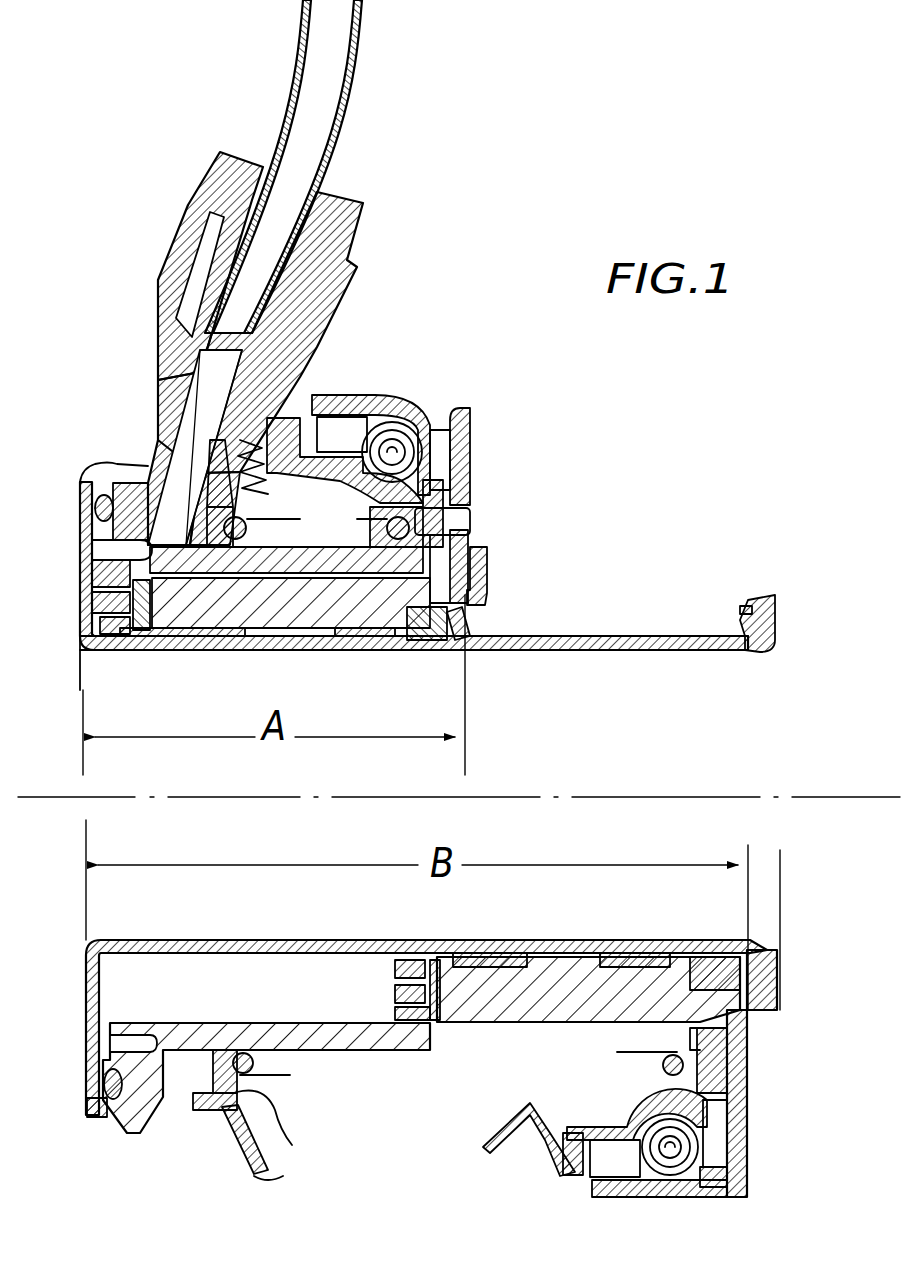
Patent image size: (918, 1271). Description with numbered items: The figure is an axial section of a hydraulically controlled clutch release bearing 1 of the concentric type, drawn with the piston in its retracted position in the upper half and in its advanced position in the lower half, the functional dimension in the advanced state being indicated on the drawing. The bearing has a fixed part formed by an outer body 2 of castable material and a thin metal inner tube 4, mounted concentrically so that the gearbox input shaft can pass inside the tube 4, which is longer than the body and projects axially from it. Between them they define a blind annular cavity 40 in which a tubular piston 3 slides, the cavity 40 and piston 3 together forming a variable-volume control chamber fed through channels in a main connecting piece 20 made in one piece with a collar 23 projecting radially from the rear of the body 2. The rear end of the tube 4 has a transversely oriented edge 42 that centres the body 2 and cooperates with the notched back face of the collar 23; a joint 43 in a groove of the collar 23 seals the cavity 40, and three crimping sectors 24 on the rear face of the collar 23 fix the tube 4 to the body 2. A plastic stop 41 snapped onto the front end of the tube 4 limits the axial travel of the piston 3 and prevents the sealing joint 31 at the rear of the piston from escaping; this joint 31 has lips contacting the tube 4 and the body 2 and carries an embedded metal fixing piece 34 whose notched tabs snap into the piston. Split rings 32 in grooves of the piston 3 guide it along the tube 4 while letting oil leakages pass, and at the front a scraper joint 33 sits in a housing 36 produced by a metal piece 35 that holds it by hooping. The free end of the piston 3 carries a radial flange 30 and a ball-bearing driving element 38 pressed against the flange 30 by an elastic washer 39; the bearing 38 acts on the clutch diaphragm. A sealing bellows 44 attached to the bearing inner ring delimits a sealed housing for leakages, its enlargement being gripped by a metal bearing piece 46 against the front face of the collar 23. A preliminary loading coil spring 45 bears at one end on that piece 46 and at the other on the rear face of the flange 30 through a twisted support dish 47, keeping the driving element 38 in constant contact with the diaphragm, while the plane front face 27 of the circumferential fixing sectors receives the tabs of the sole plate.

The clutch release bearing 1 is at (475, 208).
The outer body 2 is at (355, 318).
The piston 3 is at (527, 1025).
The inner tube 4 is at (623, 640).
The main connecting piece 20 is at (190, 230).
The collar 23 is at (165, 1137).
The crimping sectors 24 is at (87, 1115).
The plane front face 27 is at (180, 1120).
The radial flange 30 is at (745, 1065).
The sealing joint 31 is at (418, 1025).
The split rings 32 is at (490, 958).
The scraper joint 33 is at (720, 965).
The metal fixing piece 34 is at (443, 1025).
The piece 35 is at (404, 612).
The housing 36 is at (490, 615).
The driving element 38 is at (475, 445).
The elastic washer 39 is at (480, 562).
The blind annular cavity 40 is at (300, 985).
The stop 41 is at (763, 598).
The transverse edge 42 is at (80, 580).
The joint 43 is at (118, 1130).
The sealing bellows 44 is at (252, 1165).
The preliminary loading spring 45 is at (246, 548).
The metal bearing piece 46 is at (282, 1128).
The support dish 47 is at (640, 1092).